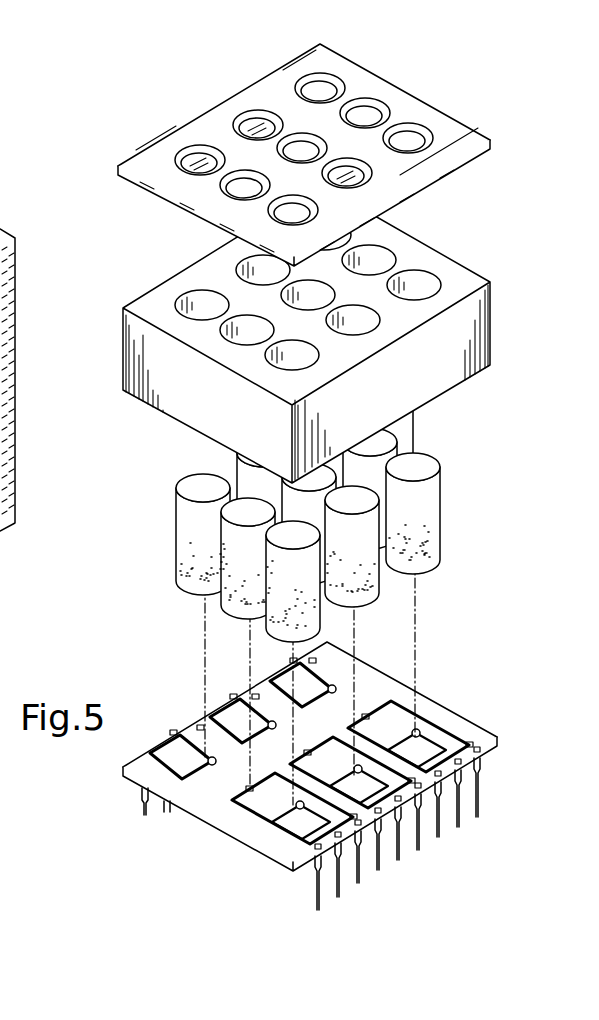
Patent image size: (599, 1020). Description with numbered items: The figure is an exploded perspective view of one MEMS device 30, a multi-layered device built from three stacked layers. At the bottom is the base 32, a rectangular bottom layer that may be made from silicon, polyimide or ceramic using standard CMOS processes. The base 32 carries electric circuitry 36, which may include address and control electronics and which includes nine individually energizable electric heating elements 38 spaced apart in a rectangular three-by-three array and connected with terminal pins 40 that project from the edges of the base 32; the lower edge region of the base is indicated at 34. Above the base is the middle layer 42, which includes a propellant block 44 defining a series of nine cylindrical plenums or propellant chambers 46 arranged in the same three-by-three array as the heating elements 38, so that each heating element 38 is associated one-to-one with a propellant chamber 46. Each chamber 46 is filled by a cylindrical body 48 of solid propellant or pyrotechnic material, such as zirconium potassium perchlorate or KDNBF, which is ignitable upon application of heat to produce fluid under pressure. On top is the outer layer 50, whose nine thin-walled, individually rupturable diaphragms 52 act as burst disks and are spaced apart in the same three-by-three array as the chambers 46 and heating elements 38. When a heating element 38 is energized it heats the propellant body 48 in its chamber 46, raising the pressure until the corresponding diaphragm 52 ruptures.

The MEMS device 30 is at (513, 233).
The base 32 is at (220, 834).
The substrate edge 34 is at (207, 795).
The electric circuitry 36 is at (348, 693).
The electric heating elements 38 is at (268, 730).
The terminal pins 40 is at (468, 851).
The middle layer 42 is at (170, 470).
The propellant block 44 is at (497, 316).
The propellant chambers 46 is at (202, 303).
The propellant bodies 48 is at (364, 572).
The outer layer 50 is at (496, 127).
The diaphragms 52 is at (255, 124).